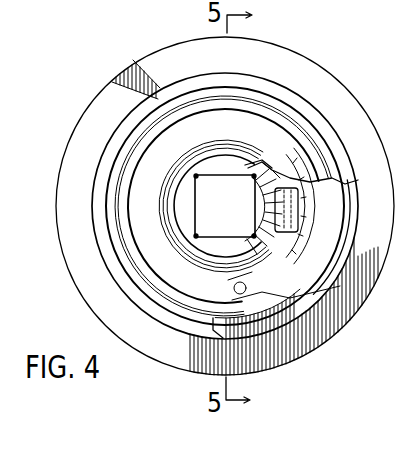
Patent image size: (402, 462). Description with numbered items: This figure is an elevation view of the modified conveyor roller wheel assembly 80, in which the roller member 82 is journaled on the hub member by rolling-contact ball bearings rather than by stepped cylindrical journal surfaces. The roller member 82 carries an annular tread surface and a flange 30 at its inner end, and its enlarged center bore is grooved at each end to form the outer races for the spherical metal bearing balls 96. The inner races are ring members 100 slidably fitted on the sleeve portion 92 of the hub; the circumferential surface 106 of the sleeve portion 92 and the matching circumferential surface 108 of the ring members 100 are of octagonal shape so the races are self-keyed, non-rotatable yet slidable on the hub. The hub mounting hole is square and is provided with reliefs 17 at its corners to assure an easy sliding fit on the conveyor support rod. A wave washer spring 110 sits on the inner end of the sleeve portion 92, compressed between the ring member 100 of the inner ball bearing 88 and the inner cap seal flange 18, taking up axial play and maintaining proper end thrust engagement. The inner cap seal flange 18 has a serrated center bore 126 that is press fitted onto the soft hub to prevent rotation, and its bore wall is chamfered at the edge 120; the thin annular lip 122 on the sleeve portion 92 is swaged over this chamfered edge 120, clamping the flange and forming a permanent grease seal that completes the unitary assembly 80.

The modified conveyor roller wheel assembly 80 is at (146, 34).
The flange 30 is at (292, 50).
The roller member 82 is at (323, 78).
The inner cap seal flange 18 is at (140, 232).
The chamfered edge 120 is at (190, 148).
The annular lip or ring portion 122 is at (170, 190).
The sleeve portion 92 is at (218, 163).
The reliefs 17 is at (199, 181).
The circumferential surface of inner ball race 108 is at (264, 206).
The wave washer spring 110 is at (276, 214).
The serrations 126 is at (285, 172).
The bearing balls 96 is at (304, 218).
The circumferential surface of sleeve portion 106 is at (310, 248).
The ring members 100 is at (228, 290).
The inner ball bearing 88 is at (275, 282).